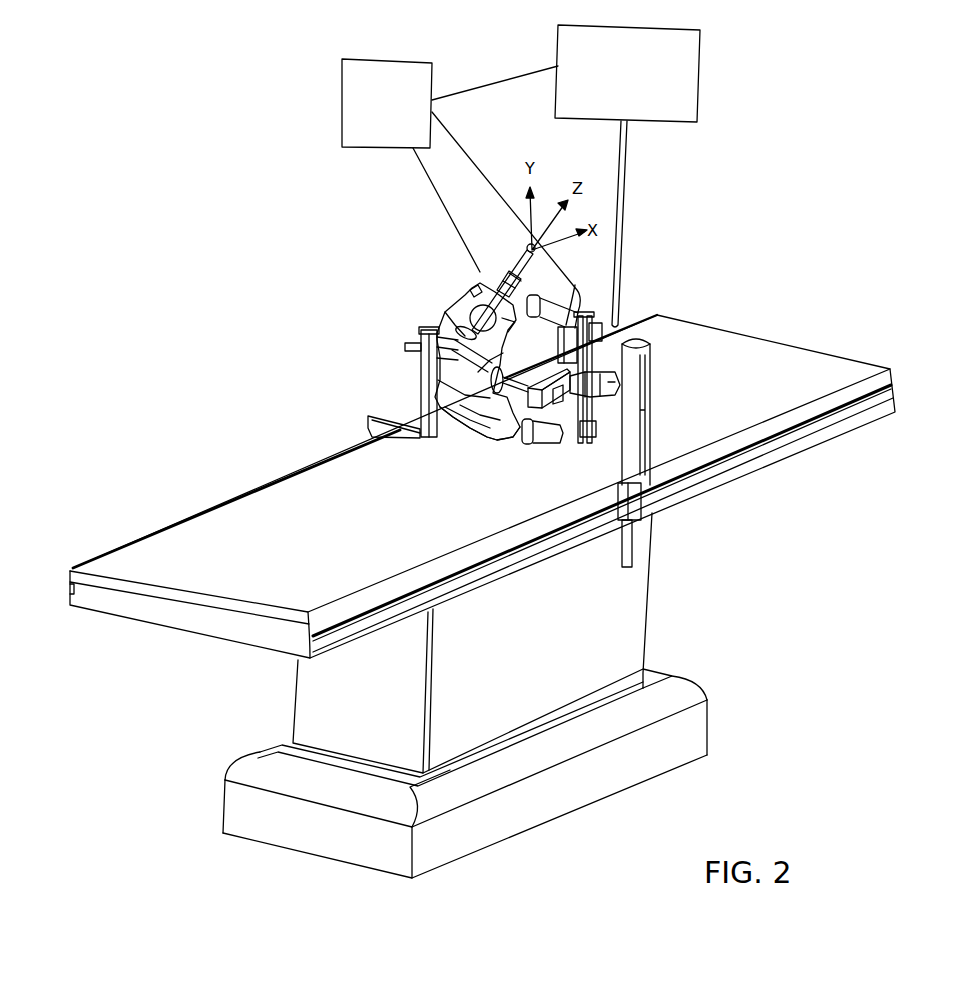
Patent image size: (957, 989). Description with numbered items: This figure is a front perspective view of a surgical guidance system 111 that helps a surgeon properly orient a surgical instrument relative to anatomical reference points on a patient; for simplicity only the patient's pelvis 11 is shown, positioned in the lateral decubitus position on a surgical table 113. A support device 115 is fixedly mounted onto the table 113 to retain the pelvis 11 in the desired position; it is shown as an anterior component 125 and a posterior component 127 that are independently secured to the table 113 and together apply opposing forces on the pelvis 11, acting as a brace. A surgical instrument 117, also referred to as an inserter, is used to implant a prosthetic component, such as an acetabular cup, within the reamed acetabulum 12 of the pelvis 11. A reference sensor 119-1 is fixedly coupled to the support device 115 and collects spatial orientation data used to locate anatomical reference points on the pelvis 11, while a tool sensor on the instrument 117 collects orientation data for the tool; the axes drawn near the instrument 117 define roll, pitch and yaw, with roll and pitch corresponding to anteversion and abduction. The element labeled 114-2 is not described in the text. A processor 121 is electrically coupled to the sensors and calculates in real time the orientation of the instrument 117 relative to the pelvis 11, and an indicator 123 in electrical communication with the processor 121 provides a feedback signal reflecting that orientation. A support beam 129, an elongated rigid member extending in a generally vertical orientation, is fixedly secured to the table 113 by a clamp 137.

The pelvis 11 is at (497, 428).
The reamed acetabulum 12 is at (473, 425).
The surgical guidance system 111 is at (848, 600).
The surgical table 113 is at (247, 492).
The tracking marker rod 114-2 is at (525, 244).
The support device 115 is at (600, 310).
The surgical instrument 117 is at (487, 285).
The reference sensor 119-1 is at (557, 342).
The processor 121 is at (405, 116).
The indicator 123 is at (637, 92).
The anterior component 125 is at (568, 478).
The posterior component 127 is at (412, 346).
The support beam 129 is at (658, 362).
The clamp 137 is at (646, 522).